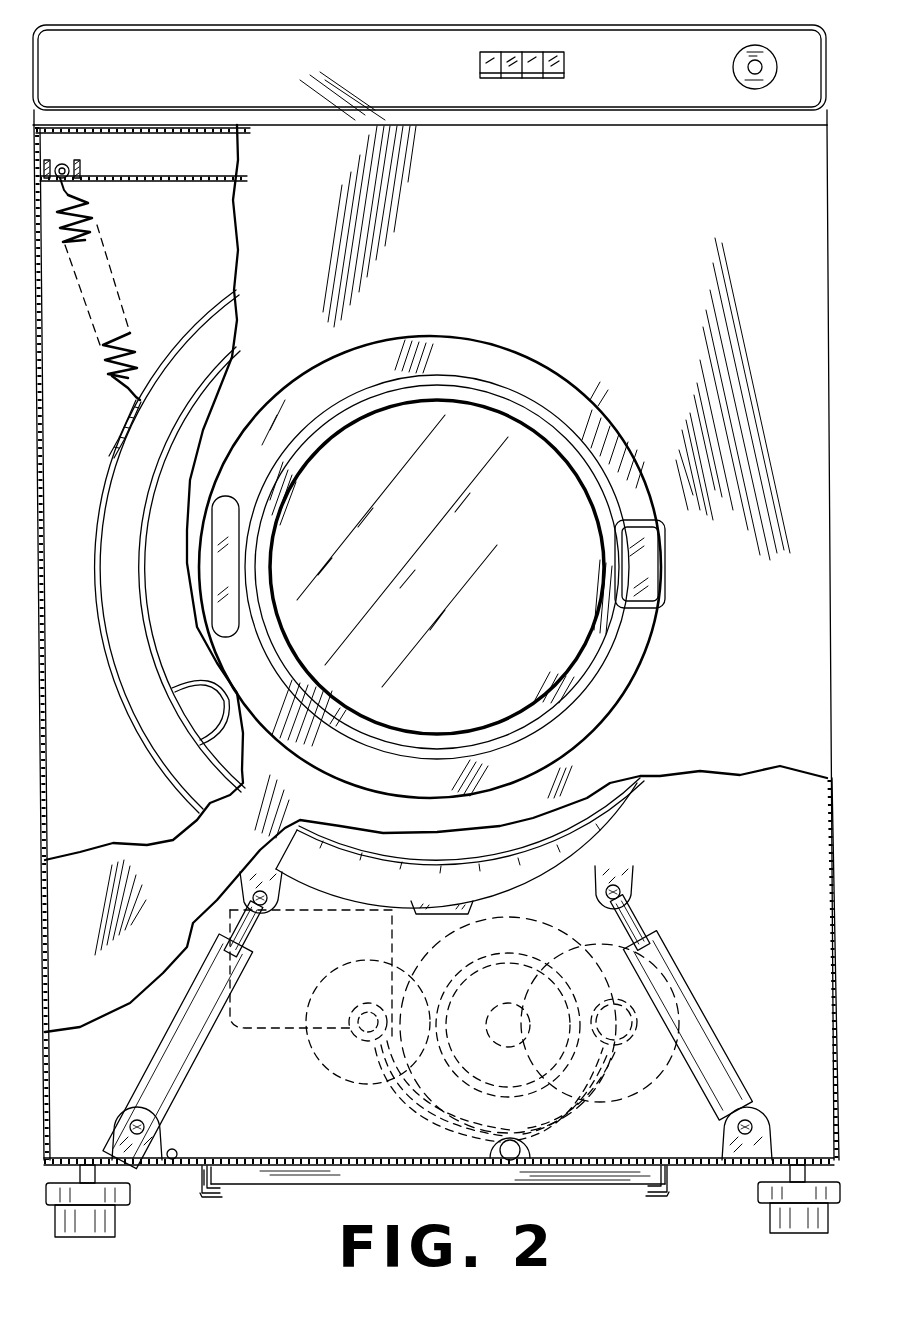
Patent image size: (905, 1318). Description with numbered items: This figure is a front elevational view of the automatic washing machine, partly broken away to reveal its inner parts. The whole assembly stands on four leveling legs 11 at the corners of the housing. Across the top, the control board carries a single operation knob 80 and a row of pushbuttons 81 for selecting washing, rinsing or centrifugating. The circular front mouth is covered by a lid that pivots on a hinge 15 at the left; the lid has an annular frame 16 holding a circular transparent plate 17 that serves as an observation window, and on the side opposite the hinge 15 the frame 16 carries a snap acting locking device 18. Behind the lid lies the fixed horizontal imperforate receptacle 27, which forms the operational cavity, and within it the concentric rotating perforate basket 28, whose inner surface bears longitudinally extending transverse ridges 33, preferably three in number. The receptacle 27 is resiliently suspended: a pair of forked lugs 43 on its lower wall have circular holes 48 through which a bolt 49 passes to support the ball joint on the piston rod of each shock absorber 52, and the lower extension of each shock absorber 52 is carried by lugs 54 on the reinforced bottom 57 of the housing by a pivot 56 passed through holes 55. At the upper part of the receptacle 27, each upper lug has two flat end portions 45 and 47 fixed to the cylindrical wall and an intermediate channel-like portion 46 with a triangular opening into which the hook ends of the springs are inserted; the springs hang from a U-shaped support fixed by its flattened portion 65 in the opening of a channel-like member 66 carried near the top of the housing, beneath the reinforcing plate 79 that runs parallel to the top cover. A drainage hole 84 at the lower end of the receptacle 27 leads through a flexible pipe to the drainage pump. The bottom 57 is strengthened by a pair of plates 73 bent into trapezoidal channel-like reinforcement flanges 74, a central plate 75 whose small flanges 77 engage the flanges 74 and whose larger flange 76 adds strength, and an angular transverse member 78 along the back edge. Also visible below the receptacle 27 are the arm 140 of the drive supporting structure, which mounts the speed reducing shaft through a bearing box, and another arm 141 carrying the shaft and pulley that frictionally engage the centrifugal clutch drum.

The leveling legs 11 is at (768, 1212).
The hinge 15 is at (237, 557).
The annular frame 16 is at (585, 410).
The circular transparent plate 17 is at (507, 499).
The snap acting locking device 18 is at (655, 568).
The stationary cylindrical imperforate receptacle 27 is at (108, 655).
The rotating perforate basket 28 is at (140, 560).
The transverse ridges 33 is at (208, 682).
The lugs 43 is at (265, 872).
The flat end portion 45 is at (140, 375).
The intermediate channel-like portion 46 is at (130, 395).
The flat end portion 47 is at (115, 440).
The circular holes 48 is at (250, 893).
The bolt 49 is at (268, 898).
The shock absorber 52 is at (175, 1015).
The lugs 54 is at (150, 1150).
The holes 55 is at (130, 1127).
The pivot 56 is at (145, 1120).
The reinforced bottom 57 is at (166, 1160).
The flattened portion 65 is at (70, 167).
The channel-like member 66 is at (80, 172).
The plates 73 is at (198, 1168).
The channel-like reinforcement flange 74 is at (212, 1194).
The central plate 75 is at (270, 1160).
The larger flange 76 is at (330, 1183).
The small flanges 77 is at (204, 1160).
The angular transverse member 78 is at (460, 1172).
The plate 79 is at (200, 177).
The operation knob 80 is at (740, 58).
The pushbuttons 81 is at (560, 62).
The drainage hole 84 is at (455, 905).
The arm 140 is at (585, 1103).
The arm 141 is at (428, 1122).